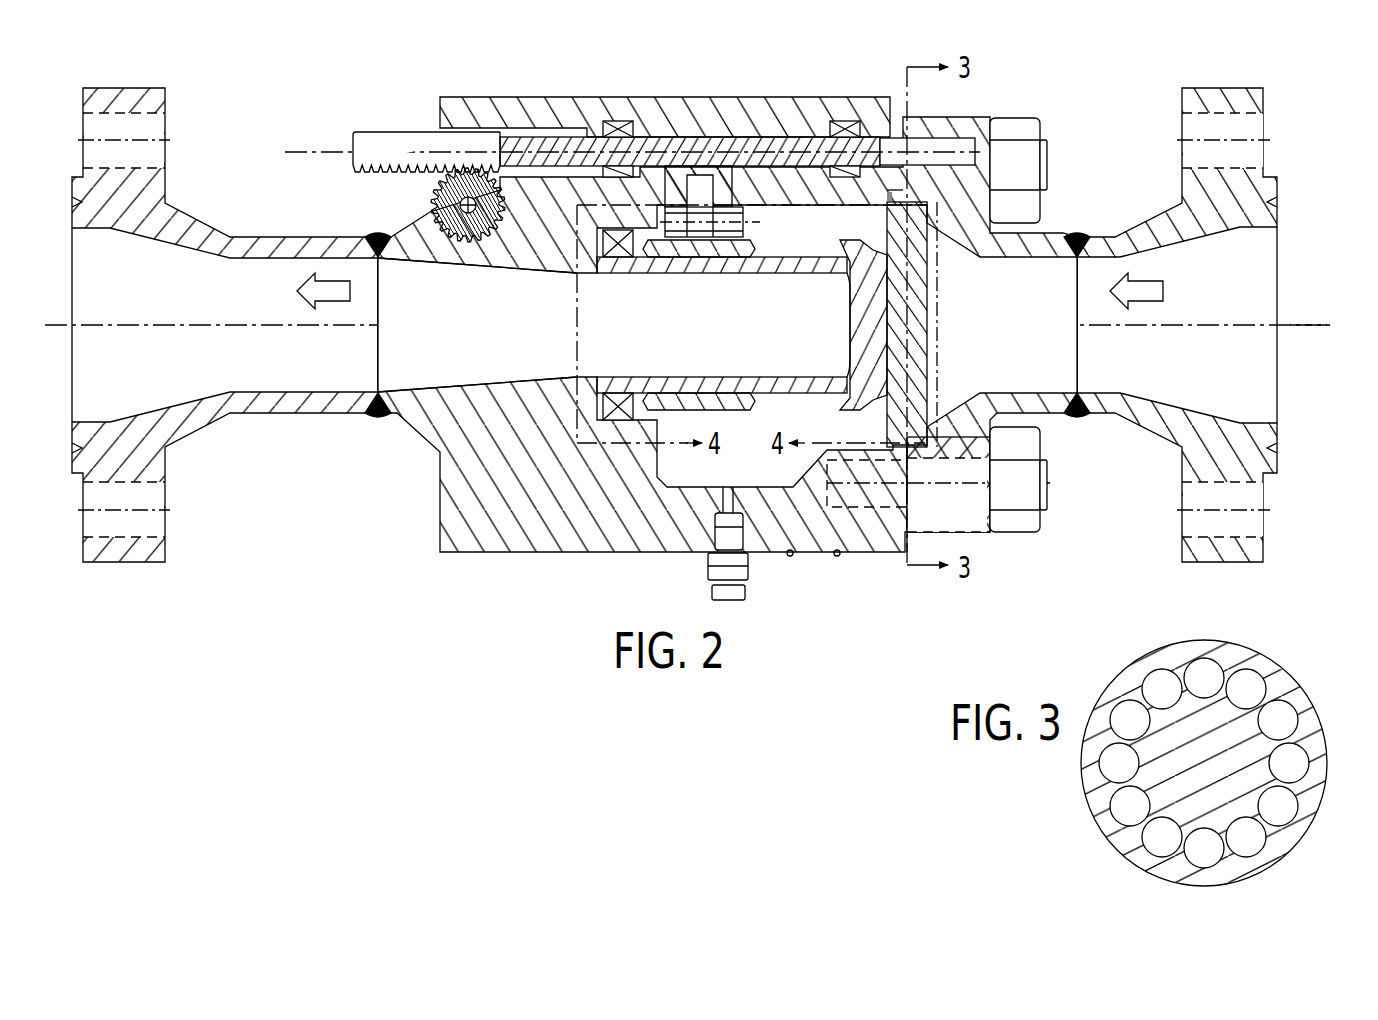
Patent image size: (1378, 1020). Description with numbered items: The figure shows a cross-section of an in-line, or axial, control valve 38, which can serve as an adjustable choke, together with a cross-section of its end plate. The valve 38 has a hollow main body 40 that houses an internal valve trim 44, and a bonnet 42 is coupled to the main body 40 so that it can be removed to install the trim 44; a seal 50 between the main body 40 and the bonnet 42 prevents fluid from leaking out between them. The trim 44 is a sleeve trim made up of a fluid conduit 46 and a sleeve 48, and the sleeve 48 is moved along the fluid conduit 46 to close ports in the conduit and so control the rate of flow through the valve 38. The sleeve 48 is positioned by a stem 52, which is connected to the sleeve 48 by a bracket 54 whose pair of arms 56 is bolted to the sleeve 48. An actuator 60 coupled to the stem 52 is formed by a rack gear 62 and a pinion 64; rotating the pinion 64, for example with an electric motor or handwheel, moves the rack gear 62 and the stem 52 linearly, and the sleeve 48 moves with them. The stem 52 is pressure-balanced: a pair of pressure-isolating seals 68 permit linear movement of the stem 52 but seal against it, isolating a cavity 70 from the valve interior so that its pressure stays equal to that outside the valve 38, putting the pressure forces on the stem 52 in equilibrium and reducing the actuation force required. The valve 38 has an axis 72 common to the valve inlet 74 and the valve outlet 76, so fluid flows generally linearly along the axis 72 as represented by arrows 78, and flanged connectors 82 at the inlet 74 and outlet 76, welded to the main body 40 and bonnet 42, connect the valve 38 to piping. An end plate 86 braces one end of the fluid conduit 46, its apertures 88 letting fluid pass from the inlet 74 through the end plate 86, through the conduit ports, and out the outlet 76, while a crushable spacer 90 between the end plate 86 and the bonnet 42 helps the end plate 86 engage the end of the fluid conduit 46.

In FIG. 2, the control valve 38 is at (216, 82).
In FIG. 2, the main body 40 is at (530, 553).
In FIG. 2, the bonnet 42 is at (948, 116).
In FIG. 2, the valve trim 44 is at (746, 420).
In FIG. 2, the fluid conduit 46 is at (690, 280).
In FIG. 2, the sleeve 48 is at (762, 244).
In FIG. 2, the seal 50 is at (882, 455).
In FIG. 2, the stem 52 is at (882, 150).
In FIG. 2, the bracket 54 is at (700, 192).
In FIG. 2, the arms 56 is at (668, 212).
In FIG. 2, the actuator 60 is at (396, 114).
In FIG. 2, the rack gear 62 is at (385, 172).
In FIG. 2, the pinion 64 is at (430, 200).
In FIG. 2, the pressure-isolating seals 68 is at (606, 124).
In FIG. 2, the cavity 70 is at (962, 152).
In FIG. 2, the axis 72 is at (1310, 330).
In FIG. 2, the valve inlet 74 is at (1046, 388).
In FIG. 2, the valve outlet 76 is at (424, 388).
In FIG. 2, the arrows 78 is at (297, 282).
In FIG. 2, the flanged connectors 82 is at (208, 428).
In FIG. 2, the end plate 86 is at (928, 312).
In FIG. 3, the end plate 86 is at (1105, 843).
In FIG. 2, the apertures 88 is at (884, 252).
In FIG. 3, the apertures 88 is at (1265, 735).
In FIG. 2, the crushable spacer 90 is at (935, 210).